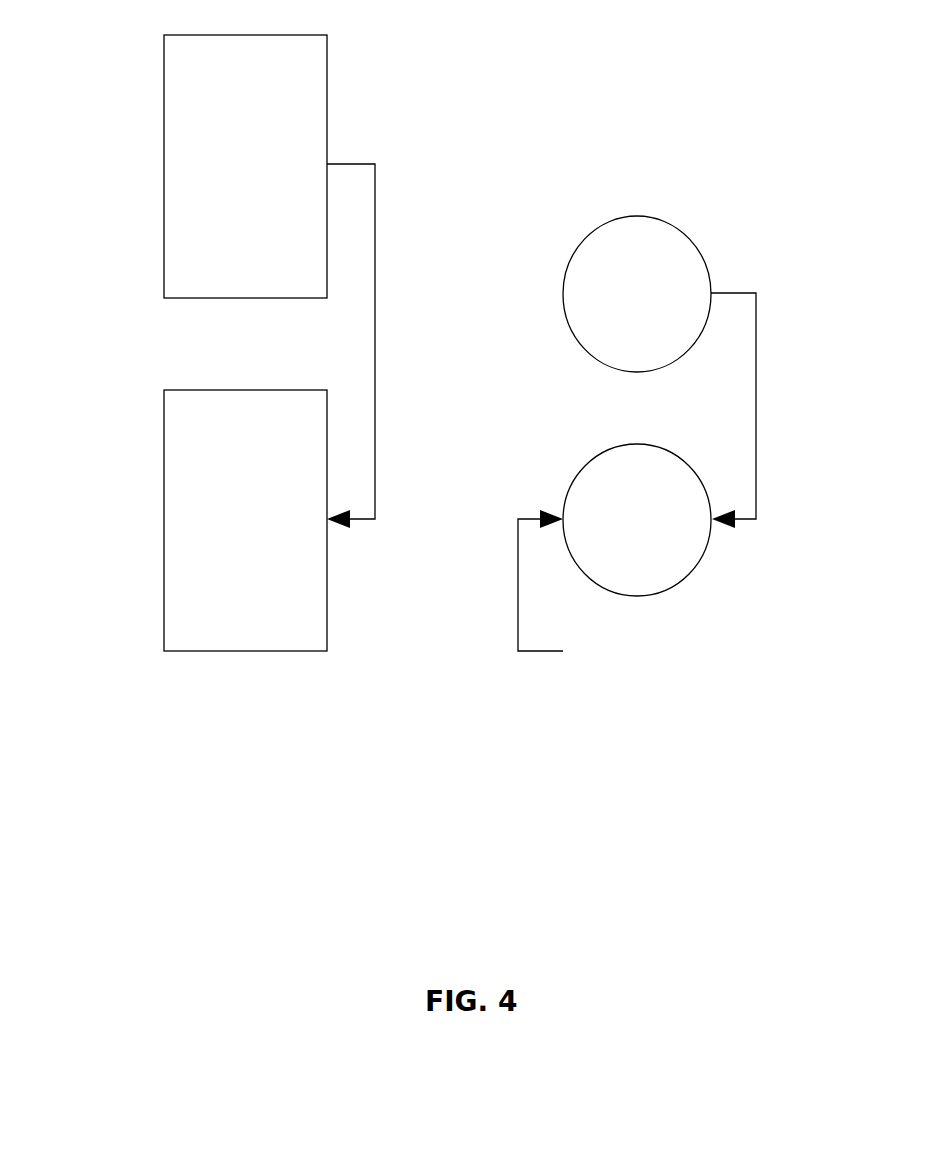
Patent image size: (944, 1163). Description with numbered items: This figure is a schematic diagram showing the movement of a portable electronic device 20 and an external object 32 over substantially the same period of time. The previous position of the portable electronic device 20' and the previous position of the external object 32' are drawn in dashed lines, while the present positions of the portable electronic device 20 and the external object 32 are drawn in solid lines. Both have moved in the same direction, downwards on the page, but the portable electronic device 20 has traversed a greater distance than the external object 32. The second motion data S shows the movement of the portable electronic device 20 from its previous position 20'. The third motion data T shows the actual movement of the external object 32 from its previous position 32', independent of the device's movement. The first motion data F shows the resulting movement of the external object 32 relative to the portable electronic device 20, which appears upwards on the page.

The previous position of portable electronic device 20' is at (188, 166).
The portable electronic device 20 is at (188, 520).
The second motion data S is at (375, 344).
The previous position of external object 32' is at (654, 249).
The external object 32 is at (652, 569).
The third motion data T is at (756, 408).
The first motion data F is at (518, 584).